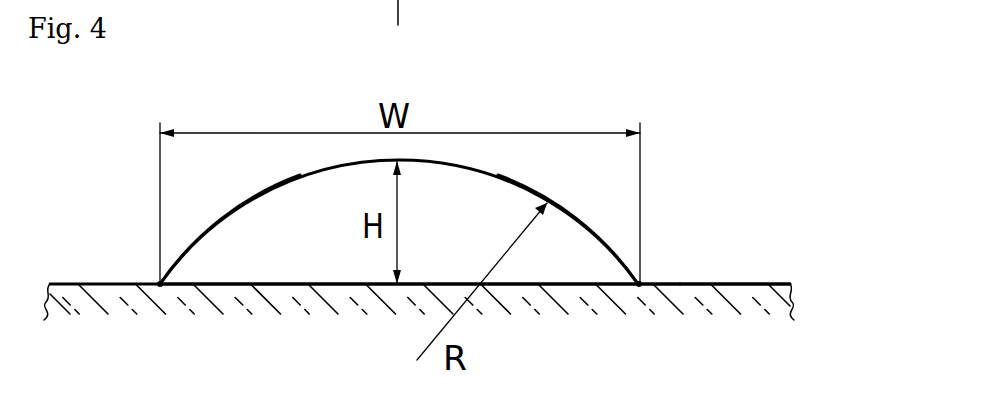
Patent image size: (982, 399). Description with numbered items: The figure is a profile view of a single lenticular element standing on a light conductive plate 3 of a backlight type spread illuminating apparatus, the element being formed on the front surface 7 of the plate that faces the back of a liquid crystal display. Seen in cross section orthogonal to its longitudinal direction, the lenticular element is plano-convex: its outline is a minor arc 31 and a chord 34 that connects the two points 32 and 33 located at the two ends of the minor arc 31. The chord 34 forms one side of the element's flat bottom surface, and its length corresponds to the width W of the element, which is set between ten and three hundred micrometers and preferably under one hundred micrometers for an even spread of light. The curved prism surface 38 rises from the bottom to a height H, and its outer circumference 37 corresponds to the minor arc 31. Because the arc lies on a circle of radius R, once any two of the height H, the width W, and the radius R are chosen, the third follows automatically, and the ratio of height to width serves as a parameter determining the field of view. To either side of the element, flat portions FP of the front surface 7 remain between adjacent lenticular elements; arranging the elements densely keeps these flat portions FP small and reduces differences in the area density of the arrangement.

The light conductive plate 3 is at (773, 284).
The front surface 7 is at (718, 284).
The minor arc 31 is at (245, 204).
The point 32 is at (160, 284).
The point 33 is at (640, 284).
The chord 34 is at (255, 283).
The outer circumference 37 is at (495, 176).
The prism surface 38 is at (303, 193).
The flat portions FP is at (680, 284).